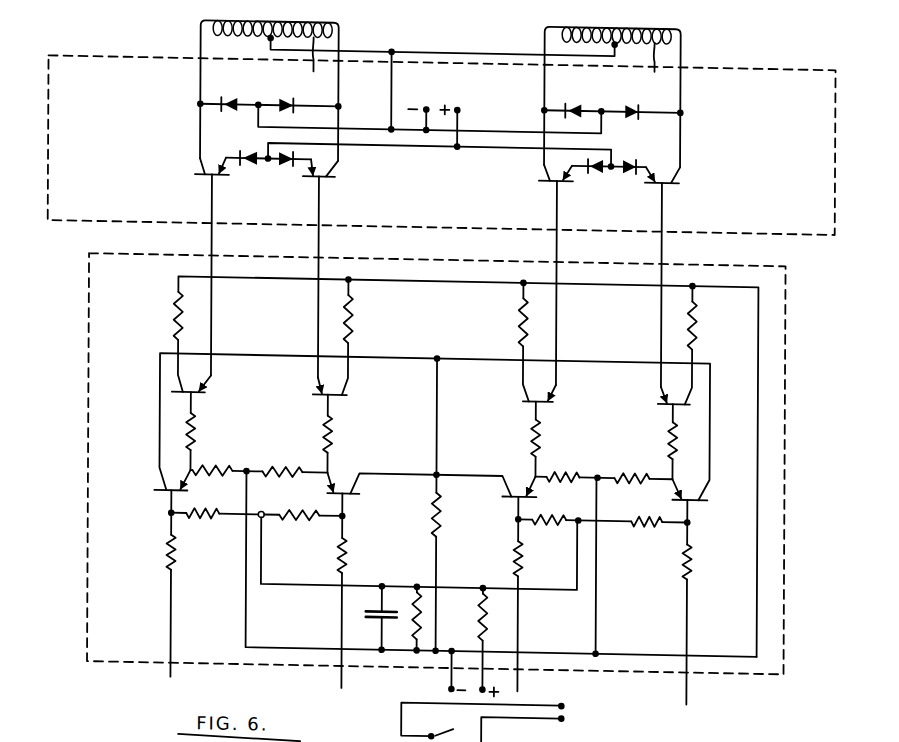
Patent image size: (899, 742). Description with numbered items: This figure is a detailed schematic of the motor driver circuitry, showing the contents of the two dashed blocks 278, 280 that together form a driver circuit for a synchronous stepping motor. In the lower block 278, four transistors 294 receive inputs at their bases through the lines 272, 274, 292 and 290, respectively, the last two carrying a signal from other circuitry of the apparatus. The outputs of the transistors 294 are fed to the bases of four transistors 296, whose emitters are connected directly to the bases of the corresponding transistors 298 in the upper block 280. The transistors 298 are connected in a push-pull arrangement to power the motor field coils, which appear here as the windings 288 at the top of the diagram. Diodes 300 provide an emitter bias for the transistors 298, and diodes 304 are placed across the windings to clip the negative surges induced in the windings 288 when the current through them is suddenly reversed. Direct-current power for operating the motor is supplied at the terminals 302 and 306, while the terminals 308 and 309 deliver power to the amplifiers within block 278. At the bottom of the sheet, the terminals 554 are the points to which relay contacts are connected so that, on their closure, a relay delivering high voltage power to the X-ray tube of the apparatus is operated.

The line 272 is at (173, 675).
The line 274 is at (341, 676).
The block 278 is at (776, 477).
The block 280 is at (796, 229).
The field coils 288 is at (440, 93).
The line 290 is at (687, 678).
The line 292 is at (520, 676).
The transistors 294 is at (157, 496).
The transistors 296 is at (206, 398).
The transistors 298 is at (196, 180).
The diodes 300 is at (286, 170).
The terminal 302 is at (458, 110).
The diodes 304 is at (285, 100).
The terminal 306 is at (427, 108).
The terminal 308 is at (450, 689).
The terminal 309 is at (486, 692).
The terminals 554 is at (568, 705).